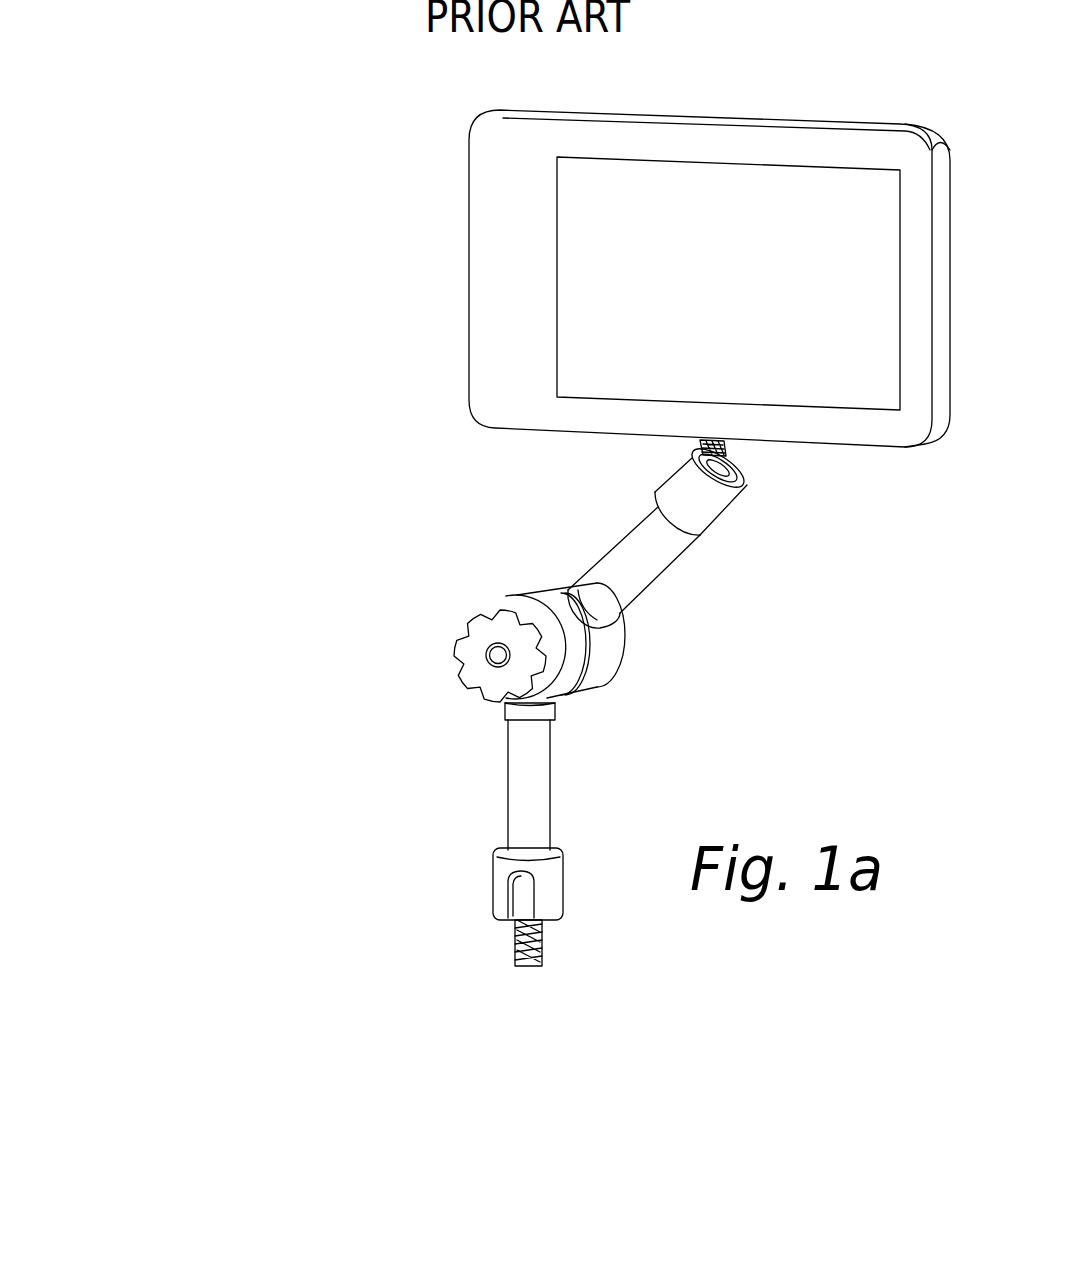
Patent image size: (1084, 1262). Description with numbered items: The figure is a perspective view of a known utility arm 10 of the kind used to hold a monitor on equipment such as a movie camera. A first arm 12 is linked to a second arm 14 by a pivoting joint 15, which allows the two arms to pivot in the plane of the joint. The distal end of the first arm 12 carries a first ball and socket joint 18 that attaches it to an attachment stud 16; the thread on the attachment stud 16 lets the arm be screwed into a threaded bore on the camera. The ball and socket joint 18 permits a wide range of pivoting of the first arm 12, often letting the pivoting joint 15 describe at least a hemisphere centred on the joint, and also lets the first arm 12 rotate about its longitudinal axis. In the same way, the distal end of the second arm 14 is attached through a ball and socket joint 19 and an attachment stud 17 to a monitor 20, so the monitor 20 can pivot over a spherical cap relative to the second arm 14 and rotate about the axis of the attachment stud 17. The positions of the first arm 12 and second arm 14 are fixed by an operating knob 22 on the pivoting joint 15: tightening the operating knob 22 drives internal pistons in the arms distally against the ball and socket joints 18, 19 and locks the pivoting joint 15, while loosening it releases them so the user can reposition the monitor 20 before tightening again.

The utility arm 10 is at (293, 510).
The first arm 12 is at (517, 799).
The second arm 14 is at (632, 555).
The pivoting joint 15 is at (615, 660).
The attachment stud 16 is at (513, 950).
The attachment stud 17 is at (723, 460).
The first ball and socket joint 18 is at (537, 885).
The ball and socket joint 19 is at (715, 498).
The monitor 20 is at (813, 378).
The operating knob 22 is at (490, 670).